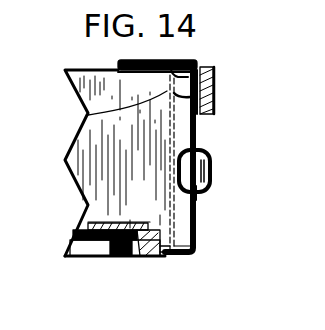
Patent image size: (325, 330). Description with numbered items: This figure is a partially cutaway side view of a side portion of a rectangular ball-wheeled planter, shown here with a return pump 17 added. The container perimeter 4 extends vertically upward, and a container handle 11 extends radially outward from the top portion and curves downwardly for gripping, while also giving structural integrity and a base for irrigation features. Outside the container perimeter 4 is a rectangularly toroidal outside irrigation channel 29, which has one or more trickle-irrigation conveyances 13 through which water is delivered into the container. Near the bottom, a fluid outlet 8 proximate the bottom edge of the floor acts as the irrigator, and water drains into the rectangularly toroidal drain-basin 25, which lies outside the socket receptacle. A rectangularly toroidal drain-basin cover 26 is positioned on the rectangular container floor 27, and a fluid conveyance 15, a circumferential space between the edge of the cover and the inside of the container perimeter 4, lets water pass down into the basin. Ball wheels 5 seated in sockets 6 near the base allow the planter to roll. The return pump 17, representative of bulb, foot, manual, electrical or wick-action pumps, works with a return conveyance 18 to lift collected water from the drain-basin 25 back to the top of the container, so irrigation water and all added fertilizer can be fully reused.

The container perimeter 4 is at (203, 128).
The ball wheels 5 is at (100, 261).
The sockets 6 is at (72, 246).
The fluid outlet 8 is at (170, 253).
The container handle 11 is at (212, 104).
The trickle-irrigation conveyances 13 is at (110, 93).
The fluid conveyance 15 is at (150, 258).
The return pump 17 is at (210, 166).
The return conveyance 18 is at (118, 62).
The rectangularly toroidal drain-basin 25 is at (131, 256).
The rectangularly toroidal drain-basin cover 26 is at (200, 195).
The rectangular container floor 27 is at (97, 213).
The rectangularly toroidal outside irrigation channel 29 is at (212, 72).